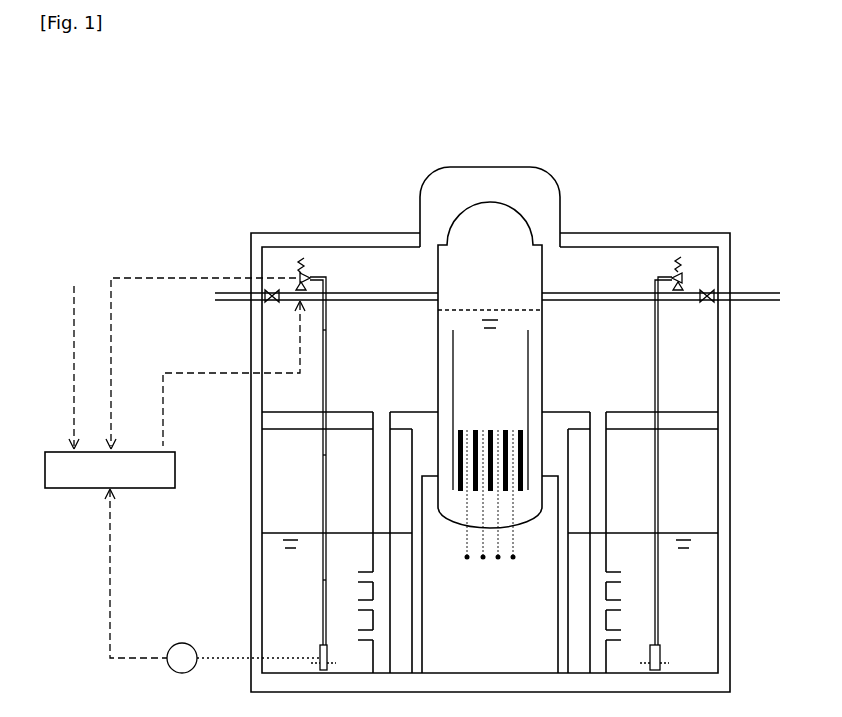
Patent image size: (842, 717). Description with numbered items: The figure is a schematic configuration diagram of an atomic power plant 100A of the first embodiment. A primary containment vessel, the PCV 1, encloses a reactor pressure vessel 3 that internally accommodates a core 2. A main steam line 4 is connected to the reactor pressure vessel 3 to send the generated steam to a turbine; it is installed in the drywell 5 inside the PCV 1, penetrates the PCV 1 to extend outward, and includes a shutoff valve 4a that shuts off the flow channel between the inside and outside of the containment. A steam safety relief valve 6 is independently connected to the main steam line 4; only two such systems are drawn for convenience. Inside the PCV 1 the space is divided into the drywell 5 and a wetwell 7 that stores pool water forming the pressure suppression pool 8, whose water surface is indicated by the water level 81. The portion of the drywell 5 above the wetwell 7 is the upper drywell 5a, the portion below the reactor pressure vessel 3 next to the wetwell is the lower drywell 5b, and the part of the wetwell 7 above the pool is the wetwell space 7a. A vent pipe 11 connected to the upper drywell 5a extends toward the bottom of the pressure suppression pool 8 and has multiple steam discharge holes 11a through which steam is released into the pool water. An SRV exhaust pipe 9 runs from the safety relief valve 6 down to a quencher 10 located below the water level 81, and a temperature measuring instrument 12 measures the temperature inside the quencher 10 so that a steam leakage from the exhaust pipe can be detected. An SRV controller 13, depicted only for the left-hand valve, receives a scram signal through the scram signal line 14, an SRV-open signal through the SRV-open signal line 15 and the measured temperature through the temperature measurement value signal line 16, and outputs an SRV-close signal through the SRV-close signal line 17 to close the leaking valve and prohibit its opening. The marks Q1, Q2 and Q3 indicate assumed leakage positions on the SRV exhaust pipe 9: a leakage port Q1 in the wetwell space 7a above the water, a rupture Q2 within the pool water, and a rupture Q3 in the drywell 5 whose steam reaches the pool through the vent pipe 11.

The atomic power plant 100A is at (601, 139).
The PCV 1 is at (620, 243).
The core 2 is at (528, 423).
The reactor pressure vessel 3 is at (542, 283).
The main steam line 4 is at (355, 293).
The shutoff valve 4a is at (270, 303).
The drywell 5 is at (700, 376).
The upper drywell 5a is at (670, 347).
The lower drywell 5b is at (480, 607).
The steam safety relief valve 6 is at (306, 277).
The wetwell 7 is at (697, 503).
The wetwell space 7a is at (670, 479).
The pressure suppression pool 8 is at (698, 627).
The S/P water level 81 is at (697, 528).
The SRV exhaust pipe 9 is at (327, 378).
The quencher 10 is at (330, 657).
The vent pipe 11 is at (595, 503).
The steam discharge holes 11a is at (360, 638).
The temperature measuring instrument 12 is at (320, 656).
The SRV controller 13 is at (135, 488).
The scram signal line 14 is at (74, 288).
The SRV-open signal line 15 is at (178, 278).
The temperature measurement value signal line 16 is at (112, 560).
The SRV-close signal line 17 is at (225, 373).
The leakage port Q1 is at (320, 455).
The rupture location in the suppression pool Q2 is at (320, 580).
The rupture location in the drywell Q3 is at (328, 326).